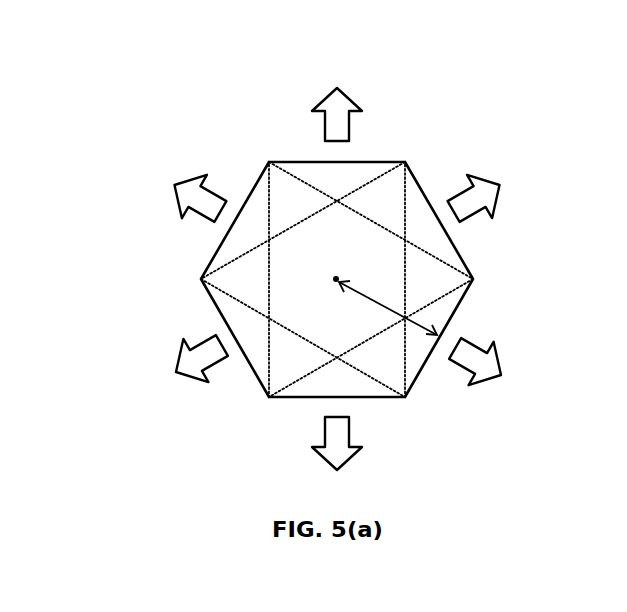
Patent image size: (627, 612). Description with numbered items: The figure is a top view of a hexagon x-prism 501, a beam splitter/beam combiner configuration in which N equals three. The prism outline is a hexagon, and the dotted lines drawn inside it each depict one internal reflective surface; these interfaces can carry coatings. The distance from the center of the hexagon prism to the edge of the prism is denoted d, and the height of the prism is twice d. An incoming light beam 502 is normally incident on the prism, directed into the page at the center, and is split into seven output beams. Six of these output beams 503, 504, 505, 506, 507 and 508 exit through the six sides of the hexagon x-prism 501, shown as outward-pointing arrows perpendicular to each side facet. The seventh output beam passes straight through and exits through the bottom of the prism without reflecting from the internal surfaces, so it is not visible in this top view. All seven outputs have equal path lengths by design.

The hexagon x-prism 501 is at (406, 397).
The incoming light beam 502 is at (338, 280).
The output beam 503 is at (317, 104).
The output beam 504 is at (183, 180).
The output beam 505 is at (185, 382).
The output beam 506 is at (323, 433).
The output beam 507 is at (455, 343).
The output beam 508 is at (483, 172).